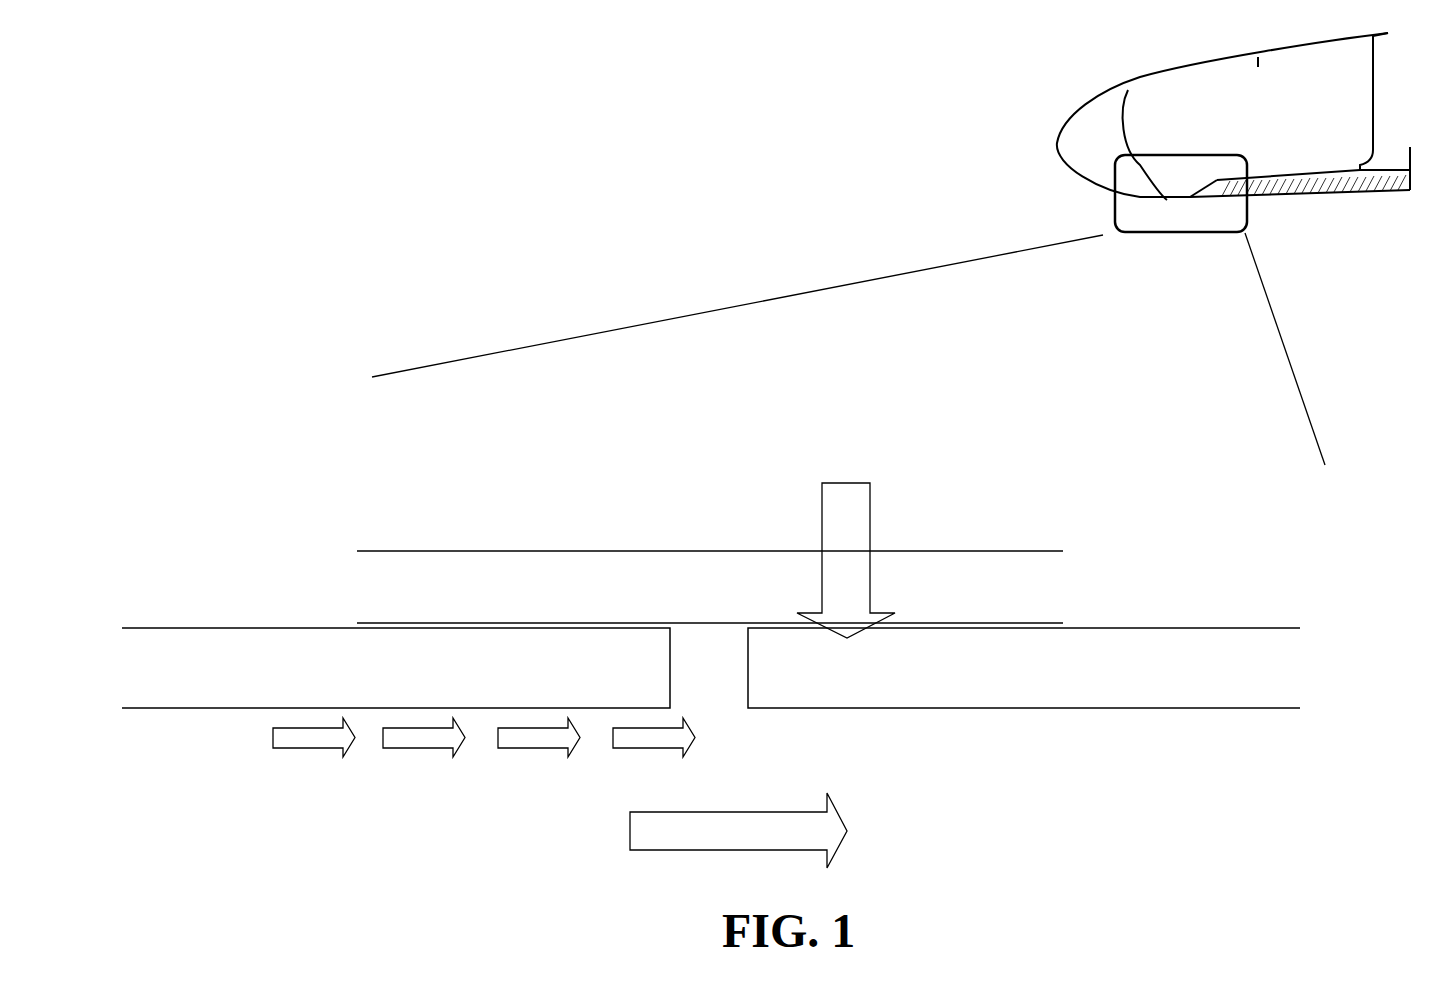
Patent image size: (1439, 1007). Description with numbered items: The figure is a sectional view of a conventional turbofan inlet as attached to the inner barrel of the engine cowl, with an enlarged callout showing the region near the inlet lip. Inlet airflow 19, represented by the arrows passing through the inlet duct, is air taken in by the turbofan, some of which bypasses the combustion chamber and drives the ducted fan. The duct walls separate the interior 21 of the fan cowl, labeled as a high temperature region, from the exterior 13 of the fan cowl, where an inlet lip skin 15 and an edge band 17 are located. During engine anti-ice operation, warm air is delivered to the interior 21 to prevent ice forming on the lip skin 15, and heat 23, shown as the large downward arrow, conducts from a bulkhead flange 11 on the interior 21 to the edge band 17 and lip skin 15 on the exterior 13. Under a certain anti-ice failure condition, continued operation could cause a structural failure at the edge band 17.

The bulkhead flange 11 is at (413, 563).
The exterior 13 is at (1180, 233).
The inlet lip skin 15 is at (208, 695).
The edge band 17 is at (900, 690).
The inlet airflow 19 is at (703, 849).
The interior 21 is at (428, 438).
The heat 23 is at (870, 528).